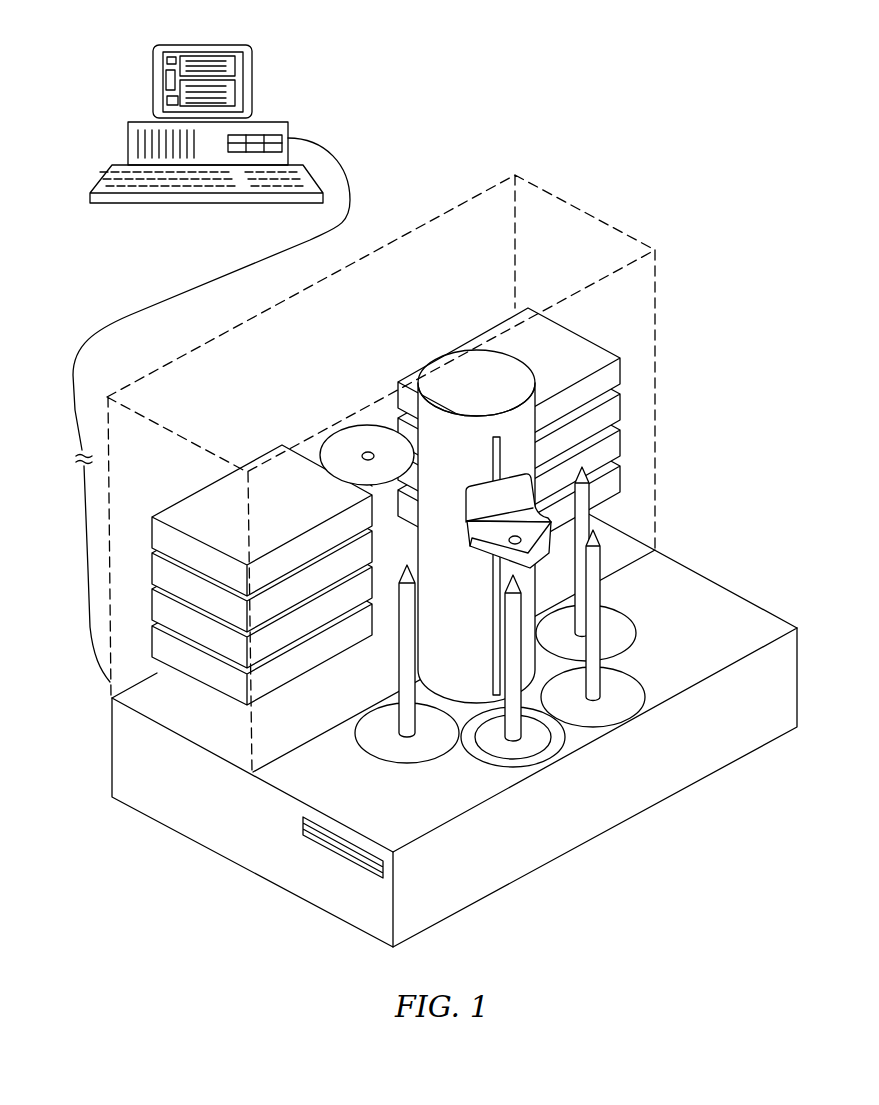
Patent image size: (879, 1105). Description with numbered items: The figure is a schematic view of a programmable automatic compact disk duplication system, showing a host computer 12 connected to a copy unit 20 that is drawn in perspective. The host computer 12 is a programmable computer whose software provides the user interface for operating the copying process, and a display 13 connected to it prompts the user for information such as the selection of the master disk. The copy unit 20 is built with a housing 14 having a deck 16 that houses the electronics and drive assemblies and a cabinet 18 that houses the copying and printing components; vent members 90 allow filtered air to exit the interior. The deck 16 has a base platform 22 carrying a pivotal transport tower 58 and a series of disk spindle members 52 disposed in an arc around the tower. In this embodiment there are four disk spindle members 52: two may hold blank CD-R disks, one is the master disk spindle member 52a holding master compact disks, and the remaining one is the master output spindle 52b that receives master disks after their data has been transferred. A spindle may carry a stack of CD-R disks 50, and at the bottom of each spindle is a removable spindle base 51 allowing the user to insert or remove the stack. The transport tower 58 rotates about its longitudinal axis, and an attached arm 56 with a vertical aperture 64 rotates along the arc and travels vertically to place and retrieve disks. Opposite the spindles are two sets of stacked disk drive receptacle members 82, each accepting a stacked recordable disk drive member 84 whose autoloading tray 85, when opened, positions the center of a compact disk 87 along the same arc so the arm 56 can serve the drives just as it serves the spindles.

The host computer 12 is at (206, 102).
The display 13 is at (233, 82).
The housing 14 is at (466, 729).
The deck 16 is at (200, 725).
The cabinet 18 is at (108, 537).
The copy unit 20 is at (275, 293).
The base platform 22 is at (320, 785).
The stack of CD-R disks 50 is at (555, 742).
The removable spindle base 51 is at (528, 767).
The disk spindle member 52 is at (600, 590).
The master disk spindle member 52a is at (517, 633).
The master output spindle 52b is at (405, 662).
The arm 56 is at (556, 515).
The pivotal transport tower 58 is at (528, 423).
The vertical aperture 64 is at (519, 537).
The stacked disk drive receptacle member 82 is at (419, 487).
The stacked recordable disk drive member 84 is at (248, 520).
The autoloading tray 85 is at (335, 418).
The compact disk 87 is at (338, 447).
The vent slot 90 is at (372, 872).